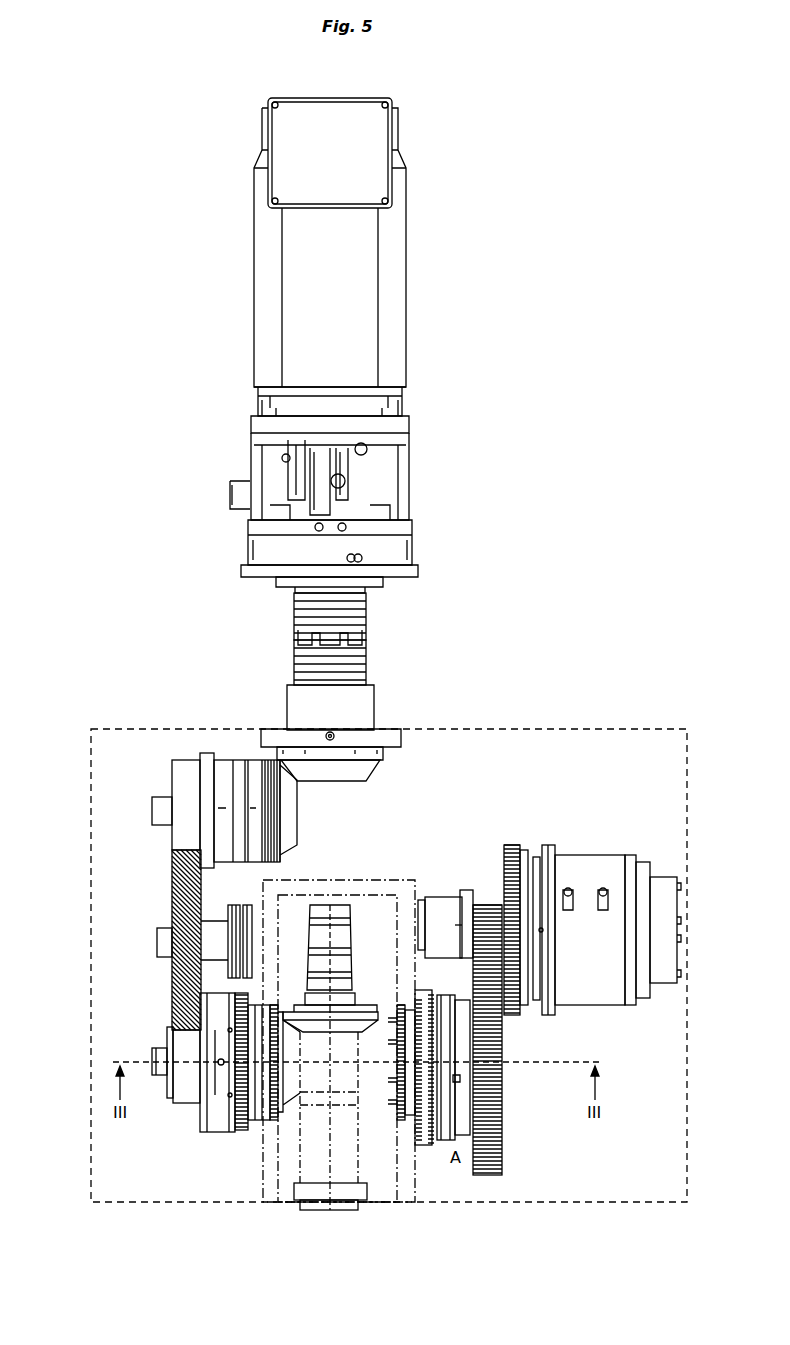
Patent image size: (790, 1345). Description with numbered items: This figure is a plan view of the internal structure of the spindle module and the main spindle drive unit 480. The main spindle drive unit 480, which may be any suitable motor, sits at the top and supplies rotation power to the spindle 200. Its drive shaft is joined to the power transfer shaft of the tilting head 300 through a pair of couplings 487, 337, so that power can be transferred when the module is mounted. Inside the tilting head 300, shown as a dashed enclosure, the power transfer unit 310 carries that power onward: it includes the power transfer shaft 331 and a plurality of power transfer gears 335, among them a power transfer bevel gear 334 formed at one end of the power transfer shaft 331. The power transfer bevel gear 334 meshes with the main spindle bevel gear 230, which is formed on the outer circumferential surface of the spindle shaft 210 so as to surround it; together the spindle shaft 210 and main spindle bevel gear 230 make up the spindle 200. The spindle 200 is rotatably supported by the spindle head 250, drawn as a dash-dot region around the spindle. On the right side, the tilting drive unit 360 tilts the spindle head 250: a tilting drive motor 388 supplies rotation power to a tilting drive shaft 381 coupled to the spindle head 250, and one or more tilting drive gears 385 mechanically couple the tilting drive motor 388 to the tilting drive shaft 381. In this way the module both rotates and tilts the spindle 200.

The main spindle drive unit 480 is at (412, 268).
The coupling 487 is at (353, 610).
The coupling 337 is at (355, 660).
The tilting head 300 is at (533, 729).
The power transfer gears 335 is at (172, 880).
The power transfer bevel gear 334 is at (253, 1037).
The power transfer unit 310 is at (175, 1067).
The power transfer shaft 331 is at (168, 1031).
The spindle head 250 is at (278, 1163).
The main spindle bevel gear 230 is at (362, 1020).
The spindle 200 is at (344, 1153).
The spindle shaft 210 is at (316, 1168).
The tilting drive shaft 381 is at (412, 1112).
The tilting drive gears 385 is at (495, 1078).
The tilting drive unit 360 is at (522, 1115).
The tilting drive motor 388 is at (590, 868).